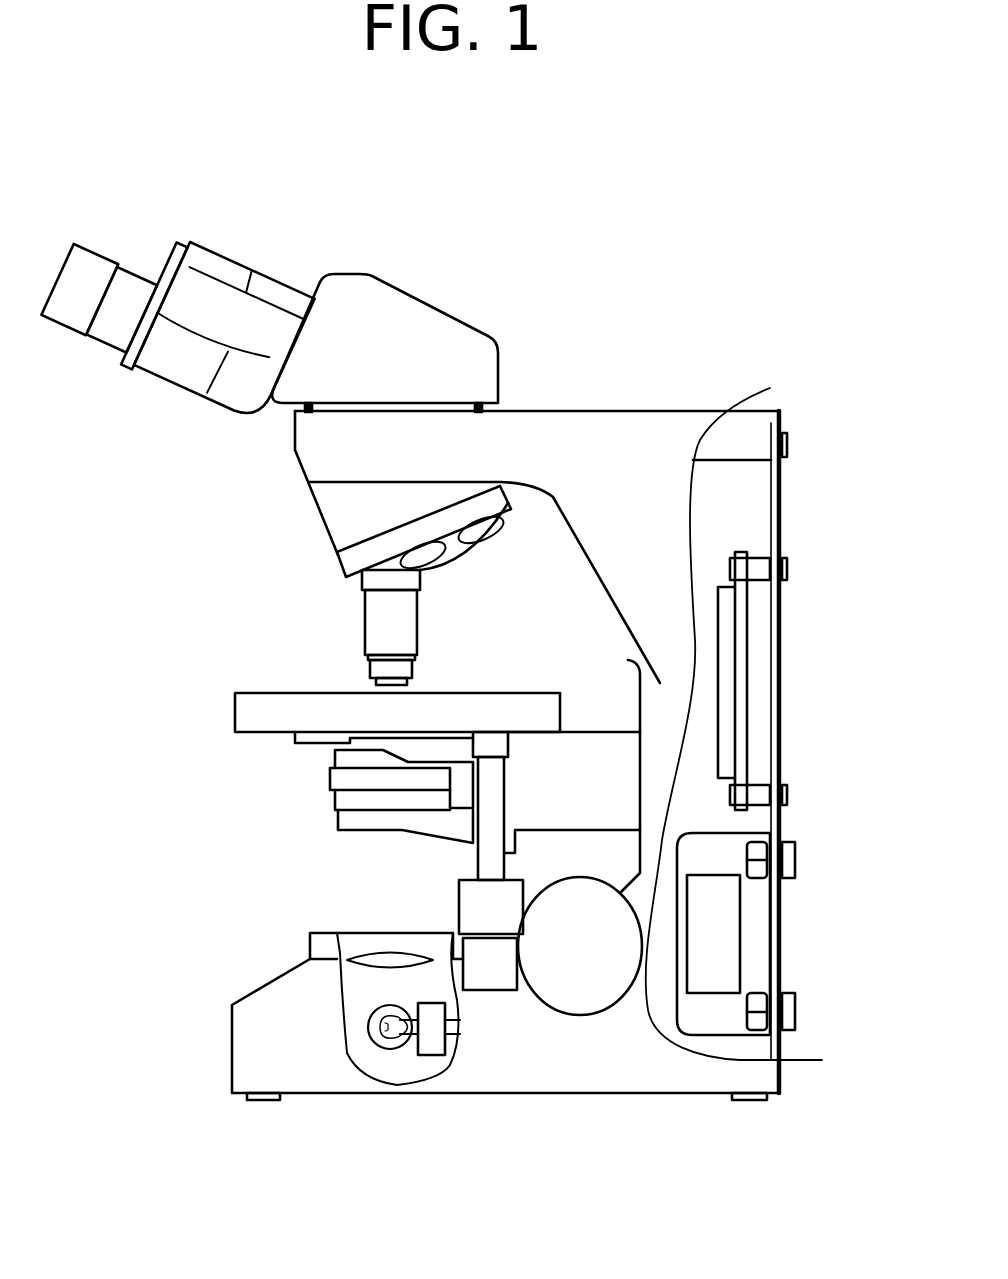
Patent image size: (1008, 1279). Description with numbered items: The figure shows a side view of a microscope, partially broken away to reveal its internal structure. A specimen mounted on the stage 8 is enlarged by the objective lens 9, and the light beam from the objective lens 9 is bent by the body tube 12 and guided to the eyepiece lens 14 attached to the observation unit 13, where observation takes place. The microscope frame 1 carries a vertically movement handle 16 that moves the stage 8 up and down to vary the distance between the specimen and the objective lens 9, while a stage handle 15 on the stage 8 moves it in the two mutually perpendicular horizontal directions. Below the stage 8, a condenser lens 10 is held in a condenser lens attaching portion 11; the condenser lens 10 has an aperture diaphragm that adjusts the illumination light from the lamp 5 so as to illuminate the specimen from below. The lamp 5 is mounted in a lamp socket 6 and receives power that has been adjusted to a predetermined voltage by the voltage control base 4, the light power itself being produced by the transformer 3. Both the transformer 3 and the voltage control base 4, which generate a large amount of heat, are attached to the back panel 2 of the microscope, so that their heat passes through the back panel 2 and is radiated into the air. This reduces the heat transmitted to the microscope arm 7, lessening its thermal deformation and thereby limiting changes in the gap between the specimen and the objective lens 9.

The microscope frame 1 is at (607, 427).
The back panel 2 is at (790, 490).
The transformer 3 is at (752, 922).
The voltage control base 4 is at (745, 665).
The lamp 5 is at (385, 1050).
The lamp socket 6 is at (430, 1047).
The microscope arm 7 is at (628, 660).
The stage 8 is at (252, 714).
The objective lens 9 is at (370, 608).
The condenser lens 10 is at (330, 777).
The condenser lens attaching portion 11 is at (355, 845).
The body tube 12 is at (413, 292).
The observation unit 13 is at (227, 260).
The eyepiece lens 14 is at (100, 247).
The stage handle 15 is at (492, 982).
The vertically movement handle 16 is at (588, 1018).